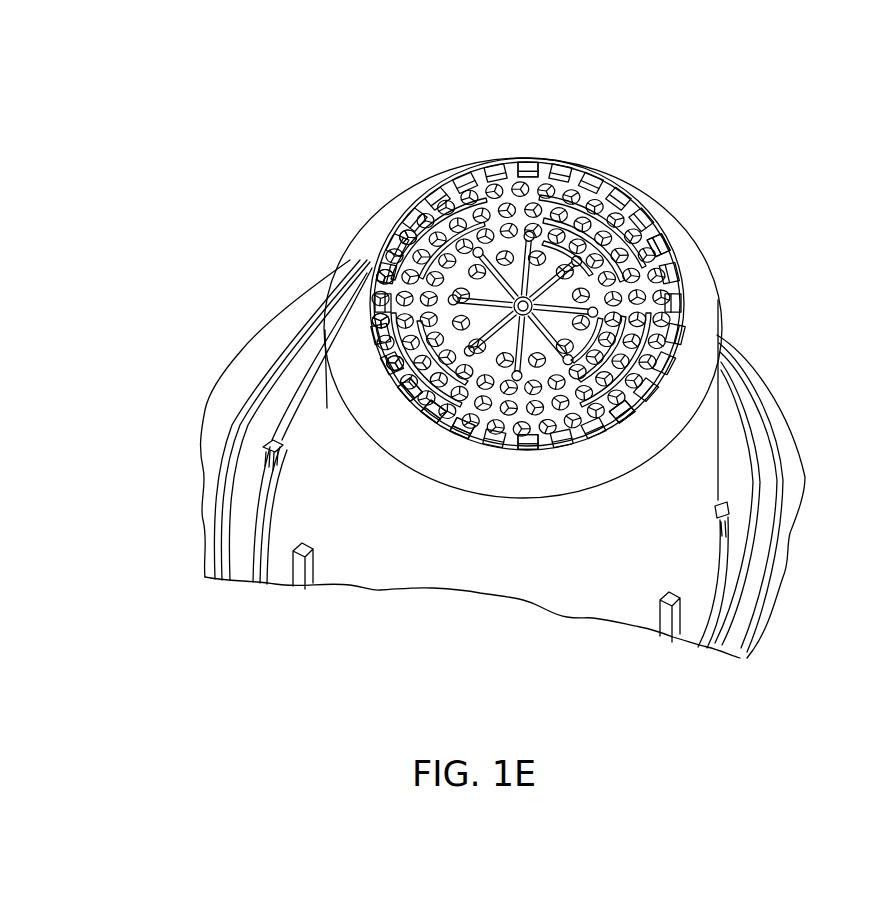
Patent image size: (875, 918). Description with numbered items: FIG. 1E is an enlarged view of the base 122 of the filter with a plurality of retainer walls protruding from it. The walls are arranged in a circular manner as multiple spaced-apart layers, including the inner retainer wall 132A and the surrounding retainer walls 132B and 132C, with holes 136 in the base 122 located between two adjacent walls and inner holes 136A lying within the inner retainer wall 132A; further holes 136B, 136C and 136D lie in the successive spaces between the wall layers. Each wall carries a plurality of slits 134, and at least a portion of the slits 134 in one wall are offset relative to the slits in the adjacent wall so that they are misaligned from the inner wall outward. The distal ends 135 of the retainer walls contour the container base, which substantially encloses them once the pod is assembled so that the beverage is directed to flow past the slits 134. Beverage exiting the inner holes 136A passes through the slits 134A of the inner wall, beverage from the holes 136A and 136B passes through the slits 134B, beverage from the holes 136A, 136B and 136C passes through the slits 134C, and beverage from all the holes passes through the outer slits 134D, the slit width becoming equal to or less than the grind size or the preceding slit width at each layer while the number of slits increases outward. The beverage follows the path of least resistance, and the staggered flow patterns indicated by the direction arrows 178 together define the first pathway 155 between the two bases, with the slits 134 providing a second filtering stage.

The base 122 is at (708, 268).
The inner retainer wall 132A is at (577, 240).
The retainer wall 132B is at (585, 220).
The retainer wall 132C is at (630, 238).
The slits 134 is at (450, 172).
The slits in the inner retainer wall 134A is at (417, 395).
The slits in the second retainer wall 134B is at (440, 425).
The slits in the third retainer wall 134C is at (470, 452).
The slits in the outer retainer wall 134D is at (537, 453).
The distal end of the retainer walls 135 is at (528, 168).
The holes 136 is at (540, 225).
The inner holes 136A is at (395, 348).
The holes 136B is at (380, 327).
The holes 136C is at (365, 283).
The holes 136D is at (395, 237).
The first pathway 155 is at (468, 165).
The direction arrows 178 is at (416, 180).